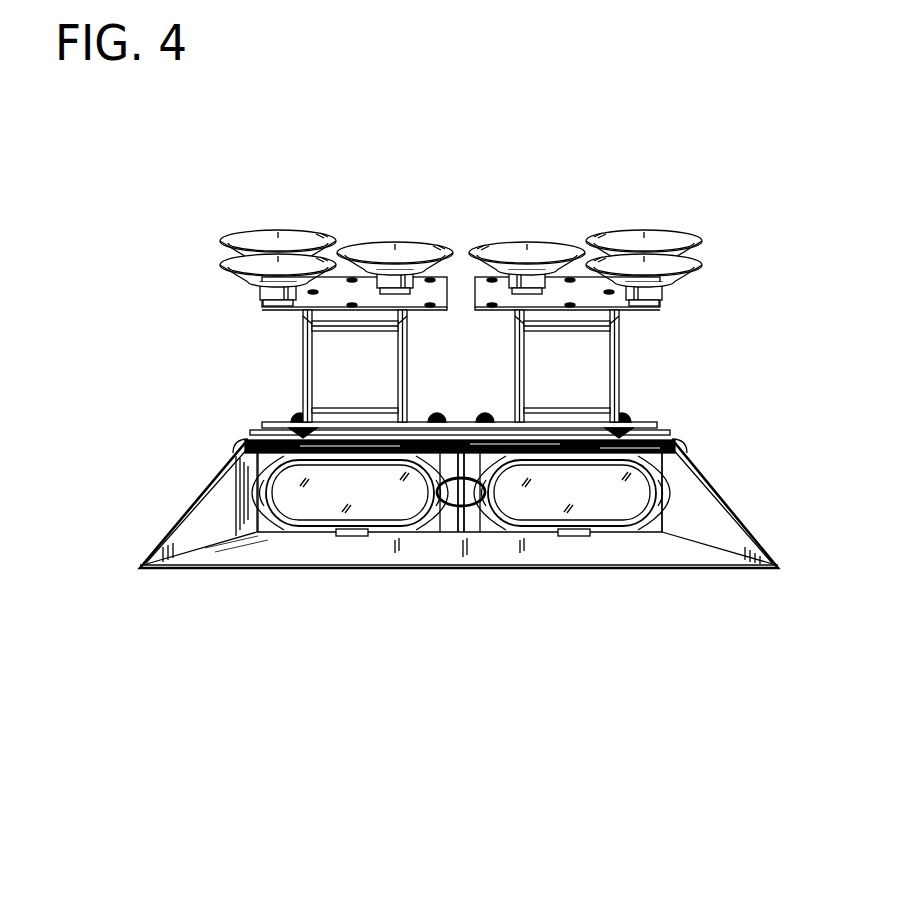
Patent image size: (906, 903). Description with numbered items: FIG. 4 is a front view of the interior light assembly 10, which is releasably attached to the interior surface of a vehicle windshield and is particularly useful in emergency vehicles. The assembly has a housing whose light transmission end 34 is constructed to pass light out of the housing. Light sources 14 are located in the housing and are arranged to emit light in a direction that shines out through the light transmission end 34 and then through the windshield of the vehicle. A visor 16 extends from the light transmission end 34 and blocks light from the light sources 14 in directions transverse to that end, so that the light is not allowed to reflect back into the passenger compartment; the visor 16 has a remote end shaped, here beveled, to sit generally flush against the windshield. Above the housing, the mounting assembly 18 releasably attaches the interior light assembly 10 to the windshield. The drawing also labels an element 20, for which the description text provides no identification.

The interior light assembly 10 is at (415, 431).
The light sources 14 is at (619, 500).
The visor 16 is at (615, 554).
The mounting assembly 18 is at (533, 218).
The top mounting rail 20 is at (664, 438).
The light transmission end 34 is at (258, 443).